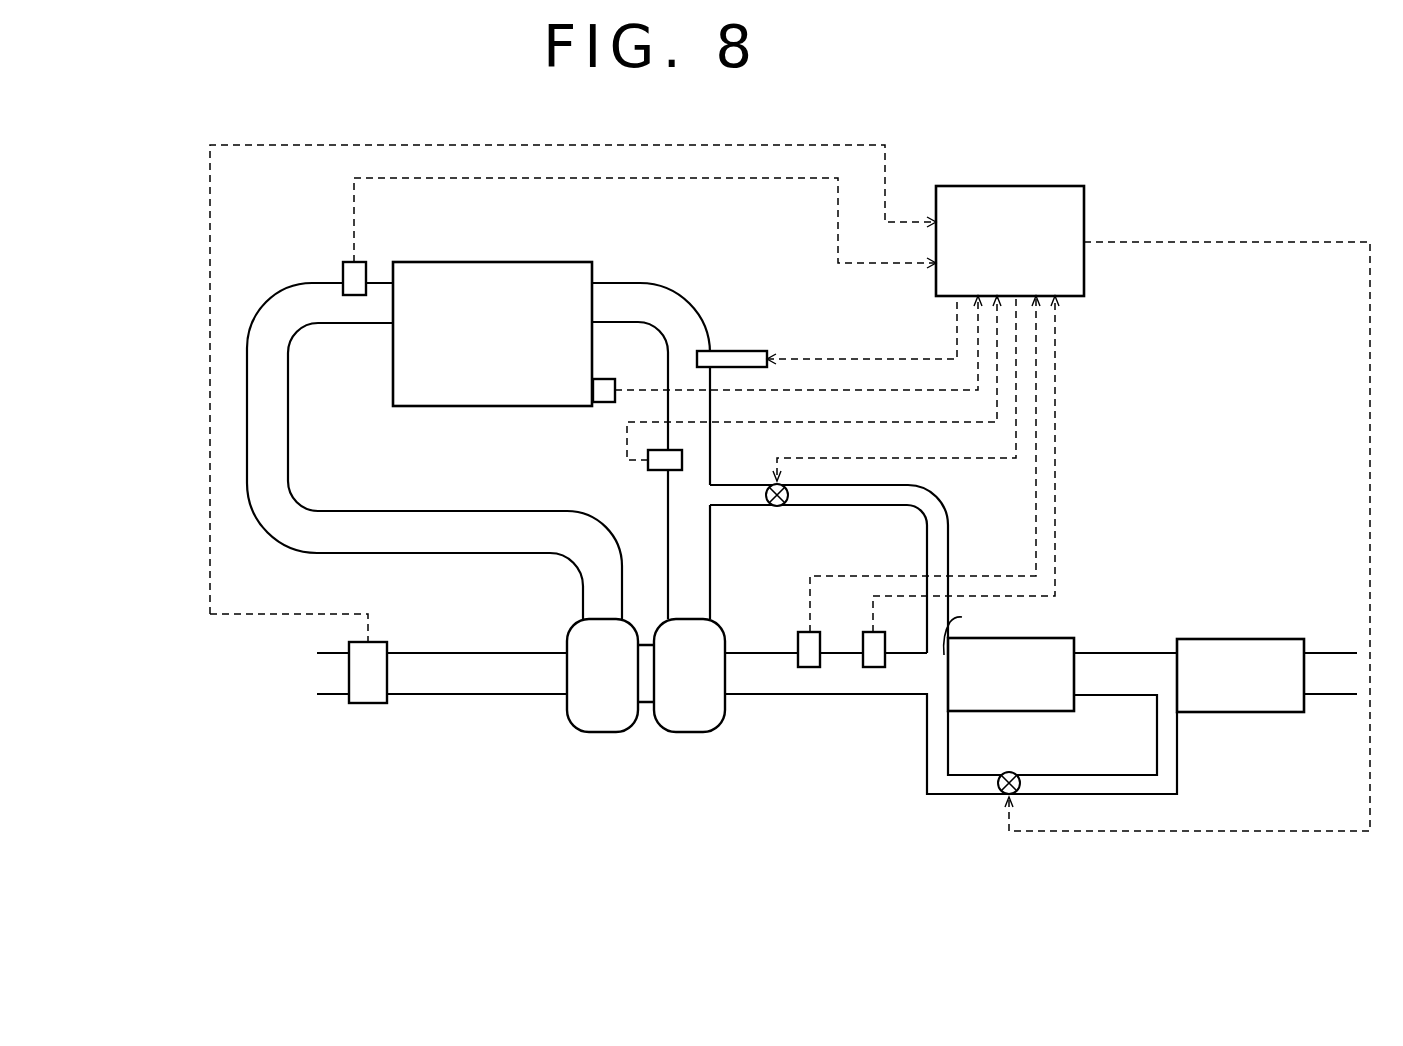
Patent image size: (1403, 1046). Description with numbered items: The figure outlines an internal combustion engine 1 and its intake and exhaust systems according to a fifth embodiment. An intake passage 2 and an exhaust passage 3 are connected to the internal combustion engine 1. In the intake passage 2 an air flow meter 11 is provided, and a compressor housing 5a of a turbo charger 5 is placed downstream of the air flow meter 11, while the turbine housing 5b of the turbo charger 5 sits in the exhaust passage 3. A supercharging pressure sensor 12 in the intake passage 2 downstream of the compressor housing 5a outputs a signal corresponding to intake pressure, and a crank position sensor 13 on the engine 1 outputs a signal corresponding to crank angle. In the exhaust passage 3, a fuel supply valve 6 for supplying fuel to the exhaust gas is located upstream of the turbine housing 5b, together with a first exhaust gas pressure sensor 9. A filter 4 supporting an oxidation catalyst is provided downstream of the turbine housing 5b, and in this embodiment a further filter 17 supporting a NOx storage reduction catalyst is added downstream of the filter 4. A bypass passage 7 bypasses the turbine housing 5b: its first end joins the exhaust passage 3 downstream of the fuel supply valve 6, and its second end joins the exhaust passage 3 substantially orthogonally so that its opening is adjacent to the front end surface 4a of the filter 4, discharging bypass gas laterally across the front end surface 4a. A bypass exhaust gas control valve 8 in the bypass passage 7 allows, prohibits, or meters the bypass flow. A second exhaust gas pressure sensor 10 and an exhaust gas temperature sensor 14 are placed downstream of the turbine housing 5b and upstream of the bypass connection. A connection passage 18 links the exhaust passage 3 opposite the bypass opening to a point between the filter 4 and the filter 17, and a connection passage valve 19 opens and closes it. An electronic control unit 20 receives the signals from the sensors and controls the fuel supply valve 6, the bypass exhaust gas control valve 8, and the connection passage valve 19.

The internal combustion engine 1 is at (493, 262).
The intake passage 2 is at (272, 538).
The exhaust passage 3 is at (683, 298).
The filter 4 is at (1047, 638).
The front end surface 4a is at (962, 617).
The turbo charger 5 is at (646, 732).
The compressor housing 5a is at (605, 733).
The turbine housing 5b is at (689, 707).
The fuel supply valve 6 is at (740, 351).
The bypass passage 7 is at (947, 498).
The bypass exhaust gas control valve 8 is at (776, 507).
The first exhaust gas pressure sensor 9 is at (660, 470).
The second exhaust gas pressure sensor 10 is at (798, 637).
The air flow meter 11 is at (365, 703).
The supercharging pressure sensor 12 is at (343, 270).
The crank position sensor 13 is at (605, 402).
The exhaust gas temperature sensor 14 is at (863, 637).
The filter 17 is at (1240, 639).
The connection passage 18 is at (947, 797).
The connection passage valve 19 is at (1010, 772).
The electronic control unit 20 is at (984, 186).